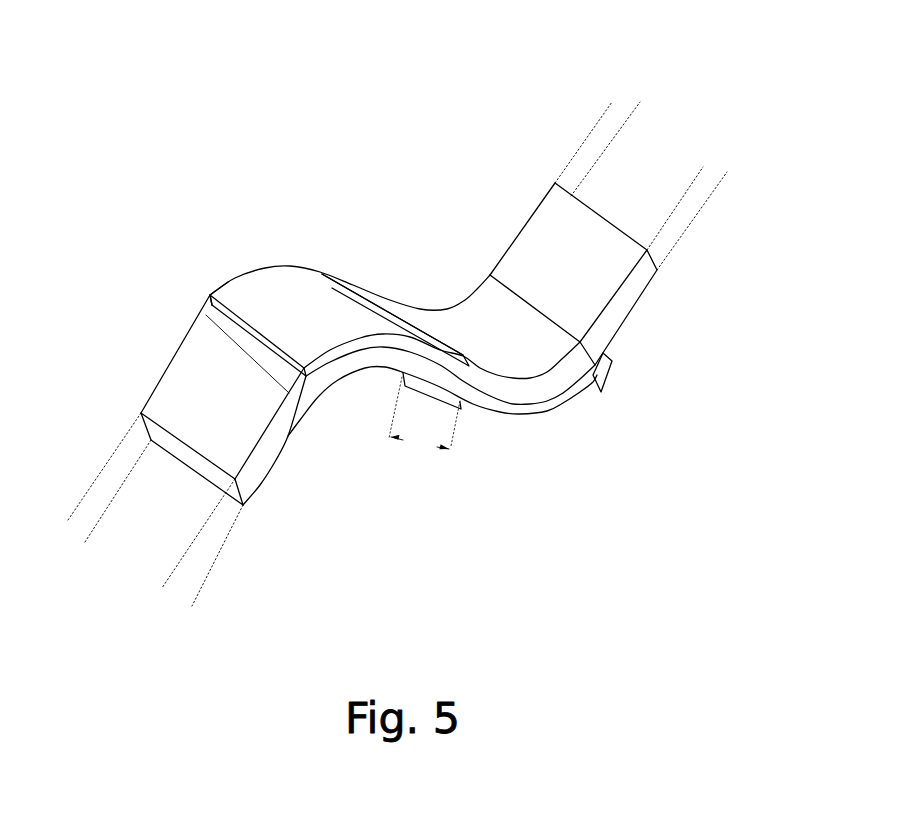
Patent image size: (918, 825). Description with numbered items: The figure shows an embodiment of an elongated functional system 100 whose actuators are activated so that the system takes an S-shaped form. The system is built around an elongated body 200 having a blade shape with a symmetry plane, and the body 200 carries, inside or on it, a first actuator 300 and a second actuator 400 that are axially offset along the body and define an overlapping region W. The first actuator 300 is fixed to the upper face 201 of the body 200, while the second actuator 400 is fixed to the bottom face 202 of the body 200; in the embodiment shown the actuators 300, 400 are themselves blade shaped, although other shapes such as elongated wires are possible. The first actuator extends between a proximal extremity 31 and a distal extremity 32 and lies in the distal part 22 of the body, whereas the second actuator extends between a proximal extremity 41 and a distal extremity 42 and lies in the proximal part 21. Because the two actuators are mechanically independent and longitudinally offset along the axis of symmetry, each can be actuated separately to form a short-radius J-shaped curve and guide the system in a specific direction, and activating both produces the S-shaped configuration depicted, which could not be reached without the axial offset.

The elongated functional system 100 is at (352, 138).
The elongated body 200 is at (273, 455).
The upper face 201 is at (442, 308).
The bottom face 202 is at (638, 306).
The first actuator 300 is at (247, 293).
The proximal extremity 31 is at (372, 279).
The distal extremity 32 is at (211, 276).
The second actuator 400 is at (536, 404).
The proximal extremity 41 is at (600, 375).
The distal extremity 42 is at (429, 398).
The proximal part 21 is at (712, 208).
The distal part 22 is at (192, 609).